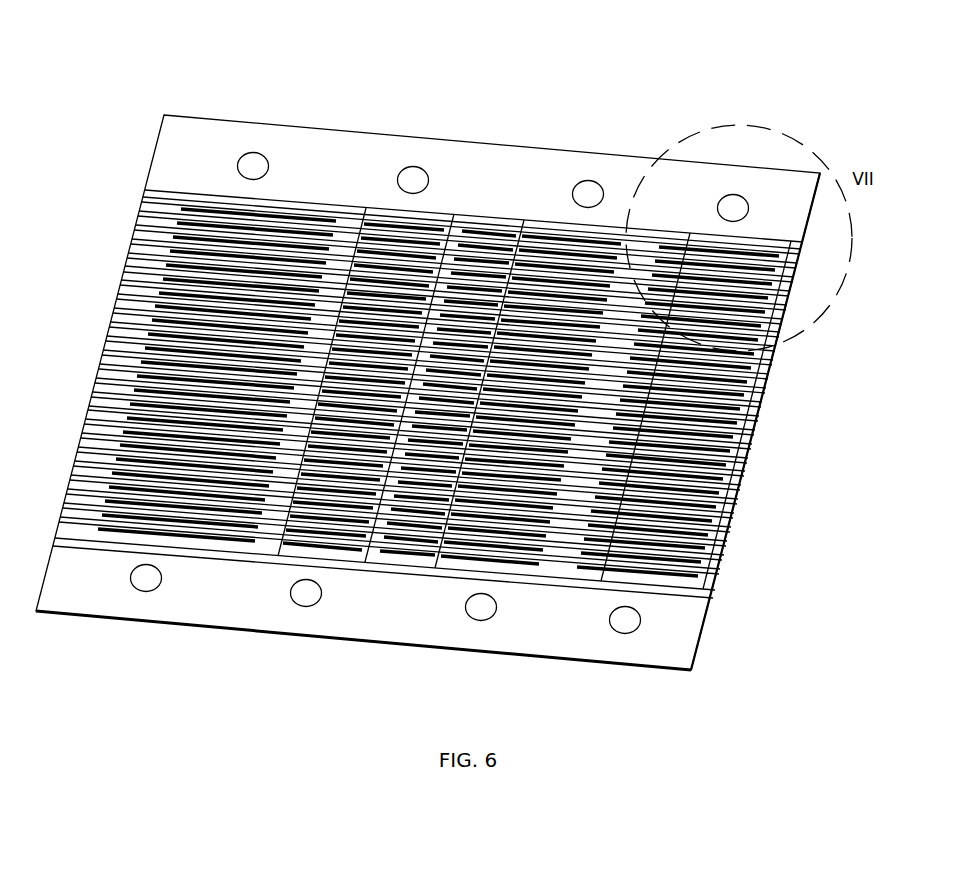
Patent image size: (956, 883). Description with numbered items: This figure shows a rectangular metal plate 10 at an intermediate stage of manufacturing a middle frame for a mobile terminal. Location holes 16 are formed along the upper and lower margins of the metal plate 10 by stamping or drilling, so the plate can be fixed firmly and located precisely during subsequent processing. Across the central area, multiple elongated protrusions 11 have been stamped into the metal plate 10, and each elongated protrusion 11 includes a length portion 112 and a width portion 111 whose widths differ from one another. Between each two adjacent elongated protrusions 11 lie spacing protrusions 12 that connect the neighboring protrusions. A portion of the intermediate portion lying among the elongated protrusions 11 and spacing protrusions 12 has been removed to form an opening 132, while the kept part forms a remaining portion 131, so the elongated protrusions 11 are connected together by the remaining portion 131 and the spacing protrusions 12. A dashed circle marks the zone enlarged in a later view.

The metal plate 10 is at (182, 150).
The location hole 16 is at (250, 162).
The elongated protrusion 11 is at (404, 40).
The length portion 112 is at (309, 204).
The width portion 111 is at (367, 213).
The remaining portion 131 is at (405, 220).
The spacing protrusion 12 is at (487, 230).
The opening 132 is at (582, 237).